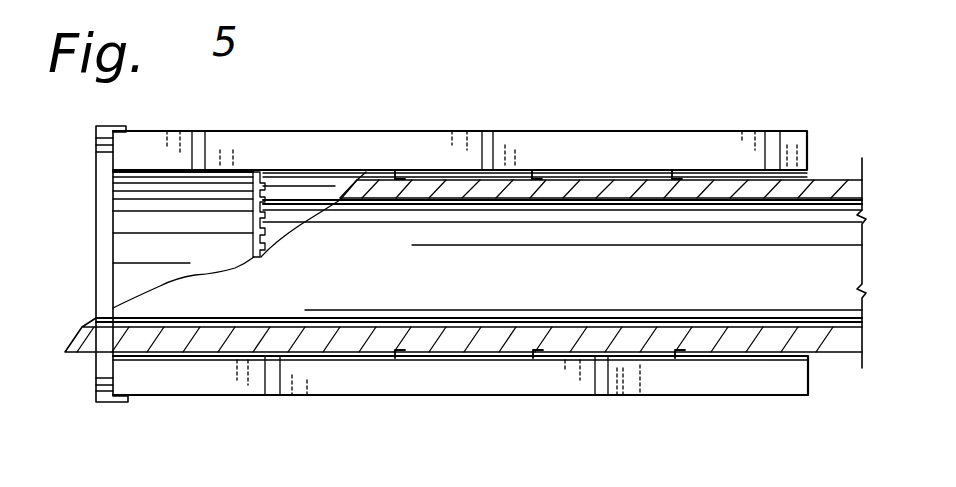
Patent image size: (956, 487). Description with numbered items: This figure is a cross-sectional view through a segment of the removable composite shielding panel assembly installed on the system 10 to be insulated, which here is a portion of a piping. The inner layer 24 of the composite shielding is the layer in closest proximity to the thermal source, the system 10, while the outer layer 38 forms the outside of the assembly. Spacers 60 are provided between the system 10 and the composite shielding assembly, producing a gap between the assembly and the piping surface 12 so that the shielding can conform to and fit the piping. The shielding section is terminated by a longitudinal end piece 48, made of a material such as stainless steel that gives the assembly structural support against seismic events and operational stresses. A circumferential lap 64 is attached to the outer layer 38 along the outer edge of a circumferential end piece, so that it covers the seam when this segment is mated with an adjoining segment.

The system 10 is at (802, 293).
The piping surface 12 is at (600, 345).
The inner layer 24 is at (124, 270).
The outer layer 38 is at (505, 131).
The longitudinal end piece 48 is at (795, 143).
The spacers 60 is at (293, 171).
The circumferential lap 64 is at (102, 202).